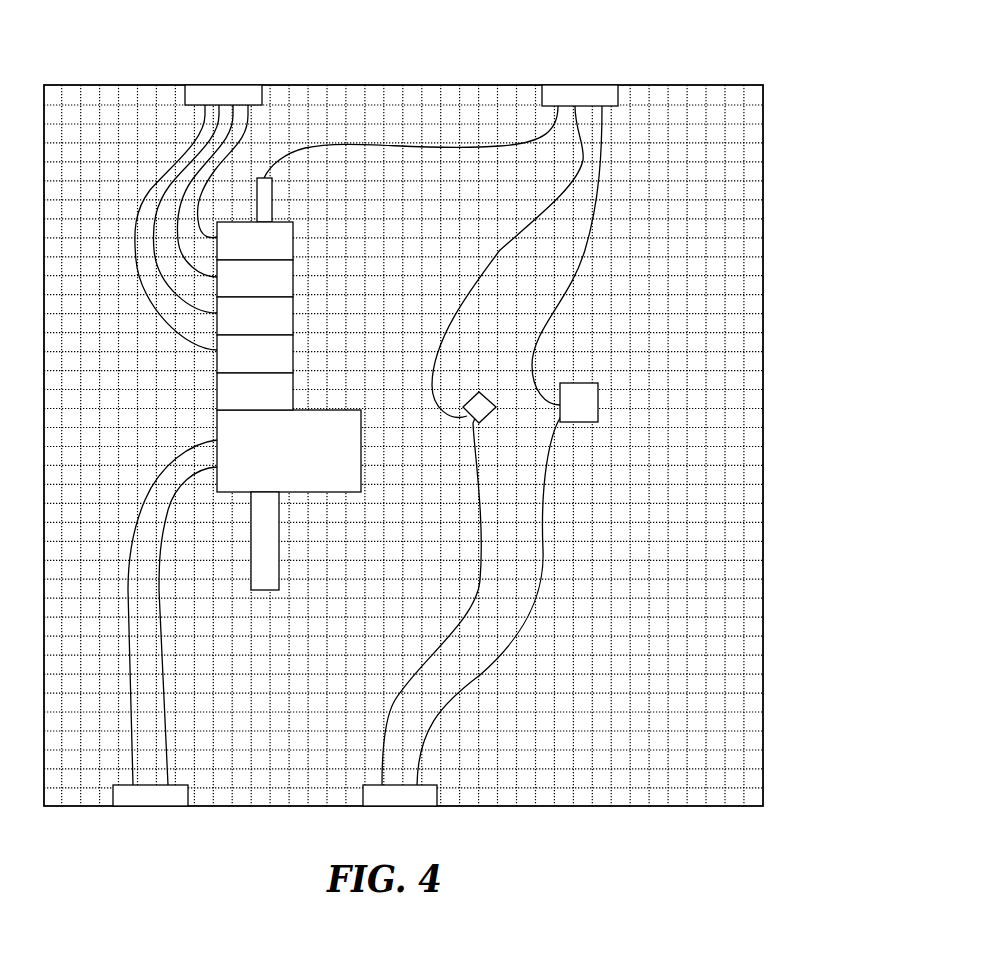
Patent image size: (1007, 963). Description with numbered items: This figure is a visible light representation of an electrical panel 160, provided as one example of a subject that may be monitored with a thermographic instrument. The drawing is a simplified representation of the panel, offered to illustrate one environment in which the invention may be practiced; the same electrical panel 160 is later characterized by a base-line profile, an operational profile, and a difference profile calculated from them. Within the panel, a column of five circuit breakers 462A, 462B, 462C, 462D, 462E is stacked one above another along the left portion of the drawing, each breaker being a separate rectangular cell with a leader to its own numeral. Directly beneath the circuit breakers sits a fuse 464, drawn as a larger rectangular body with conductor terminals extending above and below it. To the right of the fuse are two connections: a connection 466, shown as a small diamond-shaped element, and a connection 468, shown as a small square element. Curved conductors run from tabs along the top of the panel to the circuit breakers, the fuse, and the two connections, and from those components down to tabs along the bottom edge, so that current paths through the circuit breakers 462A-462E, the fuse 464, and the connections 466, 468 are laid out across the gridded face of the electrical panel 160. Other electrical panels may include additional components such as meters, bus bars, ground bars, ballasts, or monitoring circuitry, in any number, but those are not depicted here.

The electrical panel 160 is at (842, 128).
The circuit breaker 462A is at (293, 245).
The circuit breaker 462B is at (293, 283).
The circuit breaker 462C is at (293, 320).
The circuit breaker 462D is at (293, 358).
The circuit breaker 462E is at (293, 396).
The fuse 464 is at (349, 494).
The connection 466 is at (488, 392).
The connection 468 is at (597, 383).